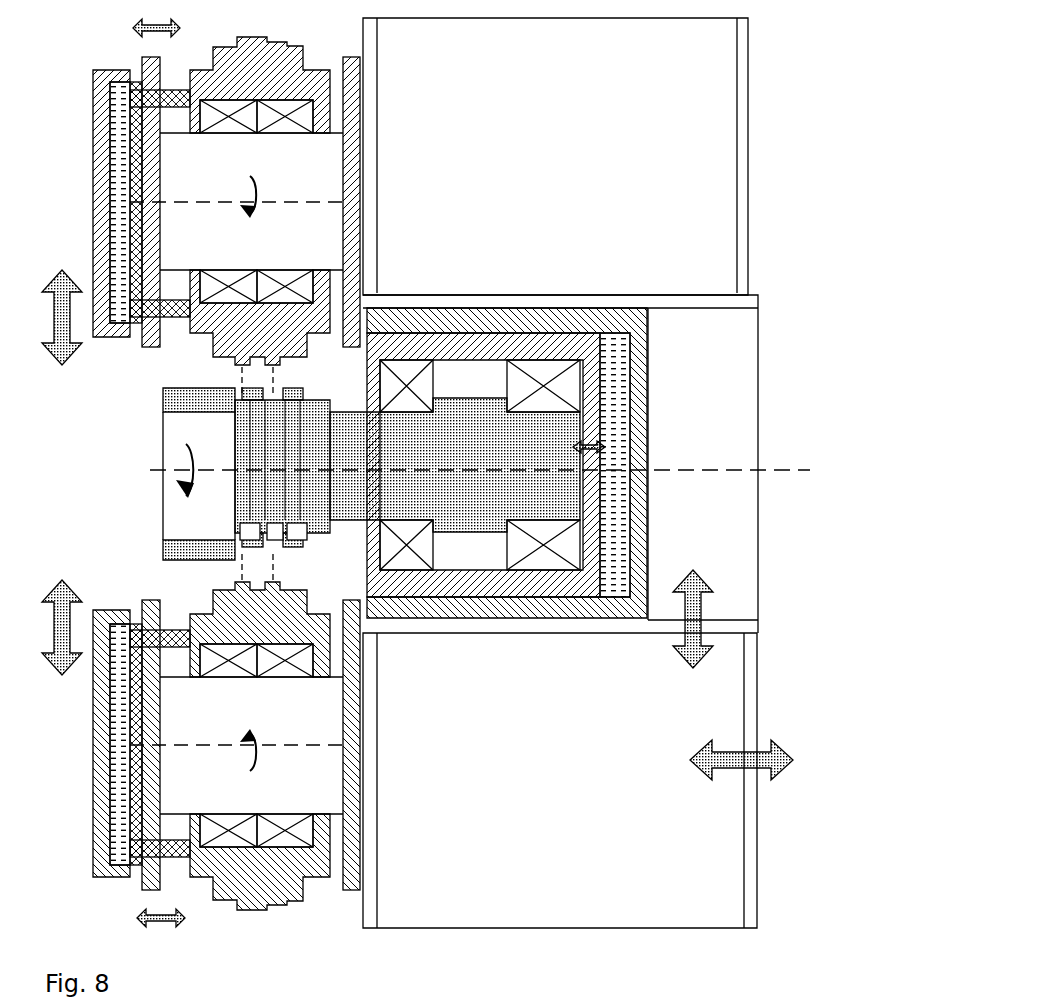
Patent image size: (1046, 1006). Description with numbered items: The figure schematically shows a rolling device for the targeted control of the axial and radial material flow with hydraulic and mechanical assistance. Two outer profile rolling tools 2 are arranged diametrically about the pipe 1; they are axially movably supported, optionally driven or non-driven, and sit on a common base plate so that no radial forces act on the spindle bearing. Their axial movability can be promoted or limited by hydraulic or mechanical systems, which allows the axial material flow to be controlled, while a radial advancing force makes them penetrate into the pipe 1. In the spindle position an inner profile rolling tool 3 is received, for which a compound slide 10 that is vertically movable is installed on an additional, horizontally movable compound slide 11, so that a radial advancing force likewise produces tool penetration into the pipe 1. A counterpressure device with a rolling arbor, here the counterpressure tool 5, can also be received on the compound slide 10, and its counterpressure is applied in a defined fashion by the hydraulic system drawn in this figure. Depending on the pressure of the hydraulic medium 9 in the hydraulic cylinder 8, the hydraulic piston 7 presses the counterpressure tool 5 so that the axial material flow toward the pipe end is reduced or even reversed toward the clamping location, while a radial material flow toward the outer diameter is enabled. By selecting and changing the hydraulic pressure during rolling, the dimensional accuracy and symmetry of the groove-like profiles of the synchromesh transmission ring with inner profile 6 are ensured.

The pipe 1 is at (200, 403).
The outer profile rolling tool 2 is at (207, 330).
The inner profile rolling tool 3 is at (250, 502).
The counterpressure tool 5 is at (323, 407).
The synchromesh transmission ring with inner profile 6 is at (297, 400).
The hydraulic piston 7 is at (135, 117).
The hydraulic cylinder 8 is at (103, 80).
The hydraulic medium 9 is at (118, 194).
The compound slide 10 is at (748, 345).
The compound slide 11 is at (750, 832).